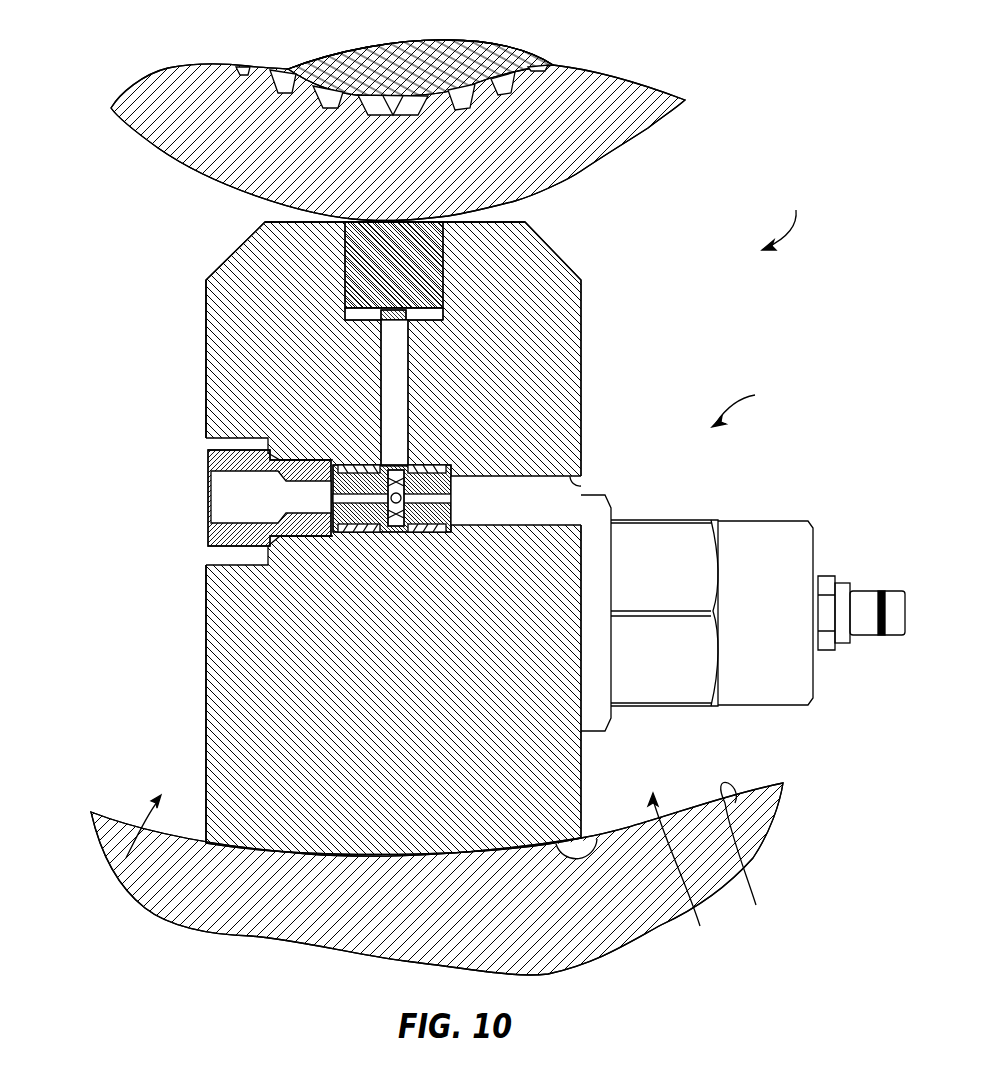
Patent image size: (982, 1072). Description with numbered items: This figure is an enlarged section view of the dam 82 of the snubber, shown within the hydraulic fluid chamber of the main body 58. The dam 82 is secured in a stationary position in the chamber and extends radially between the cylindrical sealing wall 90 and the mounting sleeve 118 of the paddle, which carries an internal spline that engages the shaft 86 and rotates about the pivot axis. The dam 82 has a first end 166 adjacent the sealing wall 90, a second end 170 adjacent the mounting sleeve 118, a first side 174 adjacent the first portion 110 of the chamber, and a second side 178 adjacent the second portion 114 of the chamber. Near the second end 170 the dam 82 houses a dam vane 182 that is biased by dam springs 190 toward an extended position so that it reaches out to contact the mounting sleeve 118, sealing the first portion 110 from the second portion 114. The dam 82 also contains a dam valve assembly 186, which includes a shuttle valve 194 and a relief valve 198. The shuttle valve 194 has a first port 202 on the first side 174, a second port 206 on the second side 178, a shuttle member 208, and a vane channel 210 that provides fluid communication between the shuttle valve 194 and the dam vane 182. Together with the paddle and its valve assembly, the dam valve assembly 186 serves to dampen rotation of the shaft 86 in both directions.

The main body 58 is at (250, 897).
The dam 82 is at (786, 212).
The shaft 86 is at (368, 67).
The sealing wall 90 is at (750, 854).
The first portion 110 is at (115, 855).
The second portion 114 is at (692, 875).
The mounting sleeve 118 is at (605, 113).
The first end 166 is at (585, 845).
The second end 170 is at (495, 213).
The first side 174 is at (198, 682).
The second side 178 is at (575, 312).
The dam vane 182 is at (375, 262).
The dam valve assembly 186 is at (752, 397).
The dam springs 190 is at (338, 308).
The shuttle valve 194 is at (447, 492).
The relief valve 198 is at (742, 528).
The first port 202 is at (198, 543).
The second port 206 is at (575, 473).
The shuttle member 208 is at (385, 518).
The vane channel 210 is at (398, 358).